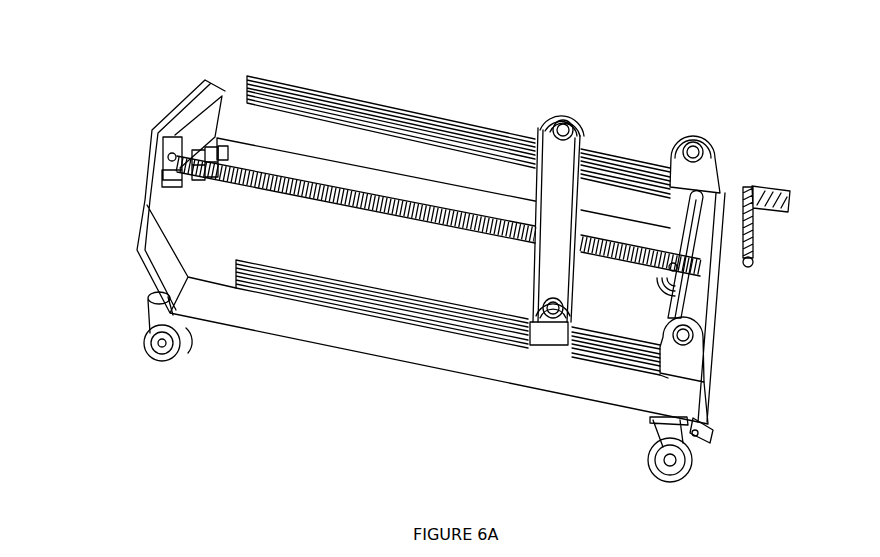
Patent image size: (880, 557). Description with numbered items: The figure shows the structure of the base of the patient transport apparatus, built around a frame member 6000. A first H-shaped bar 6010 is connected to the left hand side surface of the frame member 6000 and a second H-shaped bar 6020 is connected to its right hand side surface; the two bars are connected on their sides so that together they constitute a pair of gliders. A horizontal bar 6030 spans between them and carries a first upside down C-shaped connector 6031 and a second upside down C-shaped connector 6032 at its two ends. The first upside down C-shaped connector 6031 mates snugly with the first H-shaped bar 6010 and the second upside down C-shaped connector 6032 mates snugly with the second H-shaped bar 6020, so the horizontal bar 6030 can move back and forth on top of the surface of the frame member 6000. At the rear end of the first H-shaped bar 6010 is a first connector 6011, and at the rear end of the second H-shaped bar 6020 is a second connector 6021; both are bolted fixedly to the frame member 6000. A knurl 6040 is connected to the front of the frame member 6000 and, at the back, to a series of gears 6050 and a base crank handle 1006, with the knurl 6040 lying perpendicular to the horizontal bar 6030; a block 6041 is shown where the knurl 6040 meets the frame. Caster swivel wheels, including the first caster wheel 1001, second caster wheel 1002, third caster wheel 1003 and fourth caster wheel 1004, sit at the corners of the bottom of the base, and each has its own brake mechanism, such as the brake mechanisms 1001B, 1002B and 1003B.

The frame member 6000 is at (548, 84).
The second H-shaped bar 6020 is at (381, 99).
The first H-shaped bar 6010 is at (320, 272).
The horizontal bar 6030 is at (530, 183).
The first upside down C-shaped connector 6031 is at (535, 299).
The second upside down C-shaped connector 6032 is at (585, 122).
The knurl 6040 is at (409, 206).
The chain mount block 6041 is at (168, 148).
The second connector 6021 is at (716, 140).
The first connector 6011 is at (714, 320).
The series of gears 6050 is at (722, 283).
The second caster wheel 1002 is at (205, 196).
The brake mechanism 1002B is at (228, 152).
The fourth caster wheel 1004 is at (658, 285).
The base crank handle 1006 is at (790, 190).
The first caster wheel 1001 is at (193, 362).
The brake mechanism 1001B is at (146, 300).
The third caster wheel 1003 is at (688, 478).
The brake mechanism 1003B is at (714, 430).